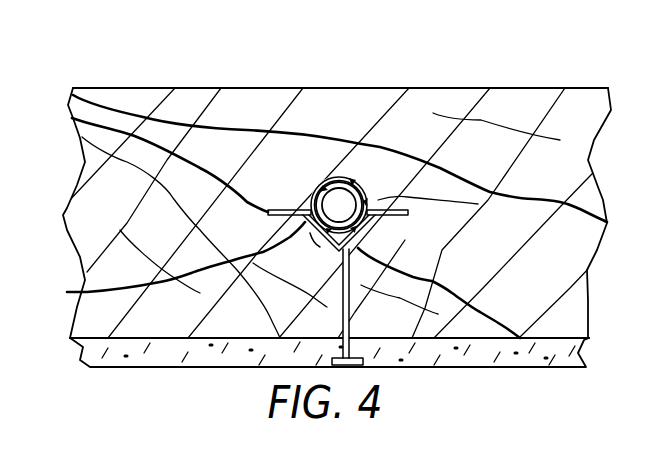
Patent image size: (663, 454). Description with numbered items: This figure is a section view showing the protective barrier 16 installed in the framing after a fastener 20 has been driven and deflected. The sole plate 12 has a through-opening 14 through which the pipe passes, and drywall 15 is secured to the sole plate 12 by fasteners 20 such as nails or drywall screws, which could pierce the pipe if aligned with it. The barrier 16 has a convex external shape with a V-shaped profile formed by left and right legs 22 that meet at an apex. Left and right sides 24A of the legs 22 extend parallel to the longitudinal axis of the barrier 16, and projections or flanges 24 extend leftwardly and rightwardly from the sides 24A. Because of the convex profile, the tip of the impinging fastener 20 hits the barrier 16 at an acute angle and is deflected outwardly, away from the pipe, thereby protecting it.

The sole plate 12 is at (584, 100).
The through-opening 14 is at (340, 252).
The drywall 15 is at (499, 352).
The protective barrier 16 is at (380, 199).
The fastener 20 is at (351, 304).
The leg 22 is at (167, 264).
The projection 24 is at (275, 210).
The side 24A is at (307, 208).